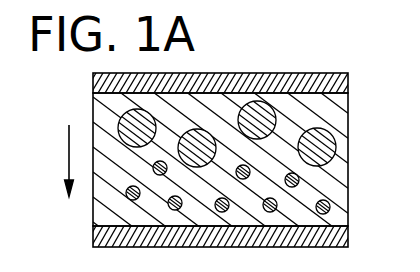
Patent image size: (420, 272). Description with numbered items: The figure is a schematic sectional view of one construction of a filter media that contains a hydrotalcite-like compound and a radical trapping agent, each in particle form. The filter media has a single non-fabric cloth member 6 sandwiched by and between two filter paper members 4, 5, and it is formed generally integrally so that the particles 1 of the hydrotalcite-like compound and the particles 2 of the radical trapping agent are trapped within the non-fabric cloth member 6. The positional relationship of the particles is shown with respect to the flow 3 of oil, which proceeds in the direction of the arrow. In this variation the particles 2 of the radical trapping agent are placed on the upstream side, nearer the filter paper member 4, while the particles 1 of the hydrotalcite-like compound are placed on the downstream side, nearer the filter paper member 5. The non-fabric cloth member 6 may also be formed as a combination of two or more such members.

The particles of the hydrotalcite-like compound 1 is at (330, 207).
The particles of the radical trapping agent 2 is at (348, 143).
The flow of oil 3 is at (68, 150).
The filter paper member 4 is at (348, 86).
The filter paper member 5 is at (342, 241).
The non-fabric cloth member 6 is at (337, 173).